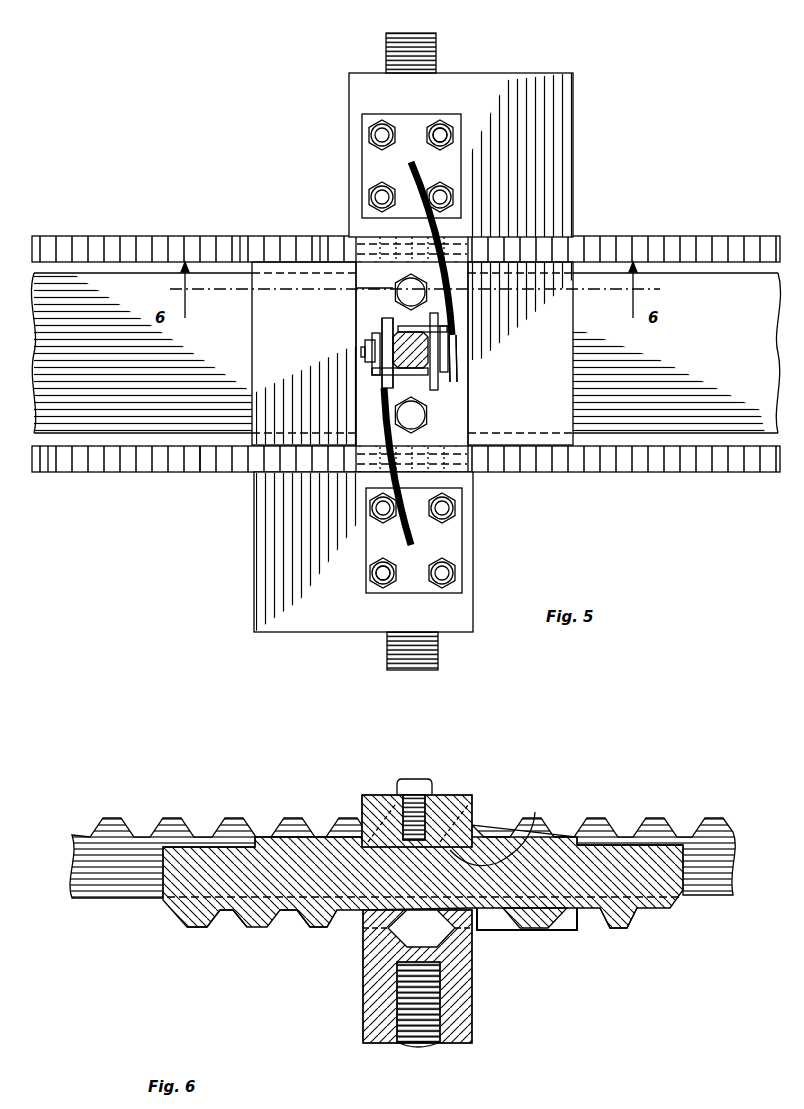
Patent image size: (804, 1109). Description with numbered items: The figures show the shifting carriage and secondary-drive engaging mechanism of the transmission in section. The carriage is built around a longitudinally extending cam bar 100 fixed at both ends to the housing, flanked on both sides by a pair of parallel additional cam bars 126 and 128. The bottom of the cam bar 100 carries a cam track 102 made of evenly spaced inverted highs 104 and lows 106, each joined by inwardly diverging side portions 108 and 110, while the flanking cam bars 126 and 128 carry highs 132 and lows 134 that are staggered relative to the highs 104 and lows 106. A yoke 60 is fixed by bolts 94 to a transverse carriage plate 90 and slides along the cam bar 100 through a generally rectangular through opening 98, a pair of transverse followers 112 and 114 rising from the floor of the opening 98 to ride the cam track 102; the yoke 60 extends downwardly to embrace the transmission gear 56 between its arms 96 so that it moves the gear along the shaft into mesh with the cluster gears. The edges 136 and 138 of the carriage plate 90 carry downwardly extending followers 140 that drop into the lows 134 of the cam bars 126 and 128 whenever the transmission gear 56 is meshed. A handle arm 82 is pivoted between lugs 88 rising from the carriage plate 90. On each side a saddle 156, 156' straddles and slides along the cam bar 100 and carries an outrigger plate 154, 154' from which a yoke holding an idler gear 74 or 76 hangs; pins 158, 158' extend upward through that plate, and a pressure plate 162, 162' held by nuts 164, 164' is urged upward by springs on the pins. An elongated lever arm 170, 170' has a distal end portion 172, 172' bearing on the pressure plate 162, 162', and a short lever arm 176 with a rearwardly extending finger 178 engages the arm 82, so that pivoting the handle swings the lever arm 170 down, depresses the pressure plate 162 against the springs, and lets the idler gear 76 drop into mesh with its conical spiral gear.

In FIG. 6, the transmission gear 56 is at (408, 1005).
In FIG. 6, the yoke 60 is at (480, 972).
In FIG. 5, the idler gear 74 is at (436, 52).
In FIG. 5, the idler gear 76 is at (395, 670).
In FIG. 5, the arm 82 is at (430, 352).
In FIG. 5, the lugs 88 is at (385, 327).
In FIG. 5, the transverse carriage plate 90 is at (438, 394).
In FIG. 6, the transverse carriage plate 90 is at (455, 795).
In FIG. 5, the bolts 94 is at (420, 414).
In FIG. 6, the bolts 94 is at (420, 785).
In FIG. 6, the arms 96 is at (462, 1000).
In FIG. 5, the through opening 98 is at (357, 288).
In FIG. 6, the through opening 98 is at (499, 830).
In FIG. 5, the cam bar 100 is at (222, 350).
In FIG. 6, the cam bar 100 is at (185, 880).
In FIG. 6, the cam track 102 is at (302, 917).
In FIG. 6, the highs 104 is at (200, 915).
In FIG. 6, the lows 106 is at (228, 910).
In FIG. 6, the side portion 108 is at (577, 920).
In FIG. 6, the side portion 110 is at (598, 925).
In FIG. 6, the transverse follower 112 is at (370, 935).
In FIG. 6, the transverse follower 114 is at (478, 935).
In FIG. 5, the cam bar 126 is at (128, 236).
In FIG. 6, the cam bar 126 is at (98, 865).
In FIG. 5, the cam bar 128 is at (150, 462).
In FIG. 5, the highs 132 is at (238, 244).
In FIG. 5, the lows 134 is at (320, 240).
In FIG. 5, the edge 136 is at (457, 247).
In FIG. 5, the edge 138 is at (462, 470).
In FIG. 6, the followers 140 is at (362, 800).
In FIG. 5, the outrigger plate 154 is at (363, 552).
In FIG. 5, the outrigger plate 154' is at (461, 142).
In FIG. 5, the saddle 156 is at (283, 353).
In FIG. 5, the saddle 156' is at (542, 353).
In FIG. 5, the pins 158 is at (408, 589).
In FIG. 5, the pins 158' is at (464, 118).
In FIG. 5, the pressure plate 162 is at (440, 540).
In FIG. 5, the pressure plate 162' is at (411, 154).
In FIG. 5, the nuts 164 is at (423, 542).
In FIG. 5, the nuts 164' is at (411, 151).
In FIG. 5, the lever arm 170 is at (329, 358).
In FIG. 5, the lever arm 170' is at (496, 341).
In FIG. 5, the distal end portion 172 is at (446, 469).
In FIG. 5, the distal end portion 172' is at (378, 267).
In FIG. 5, the short lever arm 176 is at (365, 348).
In FIG. 5, the finger 178 is at (380, 382).